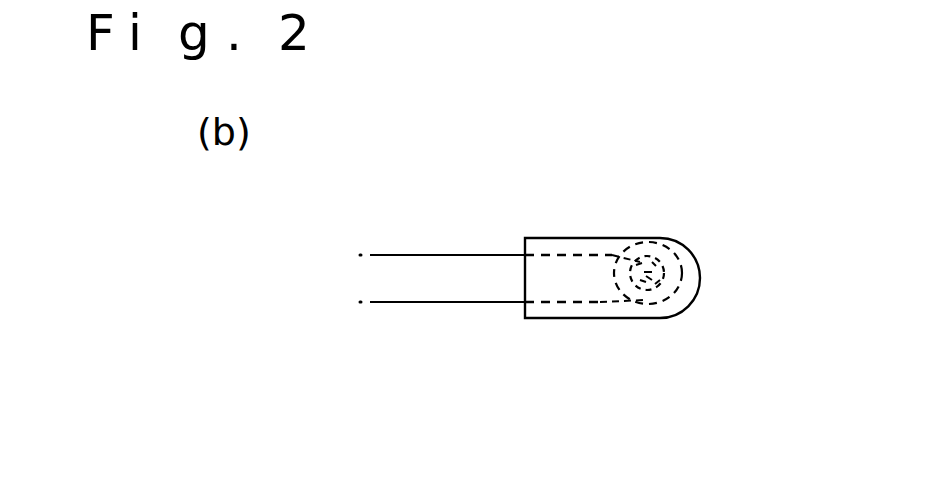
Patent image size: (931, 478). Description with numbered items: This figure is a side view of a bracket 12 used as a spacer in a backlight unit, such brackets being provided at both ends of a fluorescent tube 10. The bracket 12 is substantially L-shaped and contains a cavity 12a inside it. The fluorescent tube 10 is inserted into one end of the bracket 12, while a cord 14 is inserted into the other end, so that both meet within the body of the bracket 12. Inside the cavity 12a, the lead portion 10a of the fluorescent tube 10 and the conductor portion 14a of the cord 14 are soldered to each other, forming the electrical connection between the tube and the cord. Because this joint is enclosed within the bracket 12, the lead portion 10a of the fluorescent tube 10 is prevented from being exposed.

The bracket 12 is at (577, 212).
The cavity 12a is at (598, 303).
The fluorescent tube 10 is at (693, 255).
The lead portion 10a is at (697, 297).
The cord 14 is at (418, 288).
The conductor portion 14a is at (642, 310).